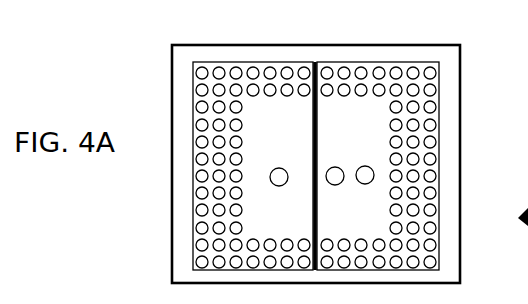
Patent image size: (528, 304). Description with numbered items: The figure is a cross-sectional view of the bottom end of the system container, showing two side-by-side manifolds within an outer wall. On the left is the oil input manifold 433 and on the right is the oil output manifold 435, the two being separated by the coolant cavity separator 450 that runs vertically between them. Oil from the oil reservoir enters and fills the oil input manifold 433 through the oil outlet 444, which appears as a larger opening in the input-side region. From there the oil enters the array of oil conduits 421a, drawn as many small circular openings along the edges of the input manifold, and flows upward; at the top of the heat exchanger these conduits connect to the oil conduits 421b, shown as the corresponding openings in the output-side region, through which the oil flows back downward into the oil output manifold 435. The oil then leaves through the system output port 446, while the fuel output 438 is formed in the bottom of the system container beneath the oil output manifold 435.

The coolant cavity separator 450 is at (315, 85).
The oil conduits 421a is at (202, 143).
The oil conduits 421b is at (430, 143).
The oil input manifold 433 is at (298, 133).
The oil output manifold 435 is at (366, 133).
The oil outlet 444 is at (286, 183).
The system output port 446 is at (340, 184).
The fuel output 438 is at (371, 182).